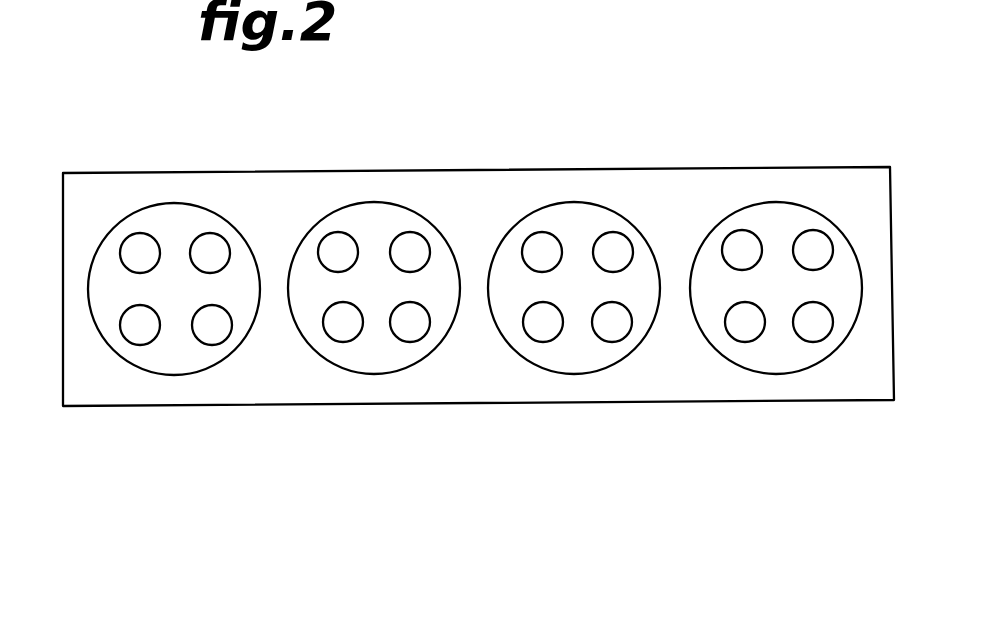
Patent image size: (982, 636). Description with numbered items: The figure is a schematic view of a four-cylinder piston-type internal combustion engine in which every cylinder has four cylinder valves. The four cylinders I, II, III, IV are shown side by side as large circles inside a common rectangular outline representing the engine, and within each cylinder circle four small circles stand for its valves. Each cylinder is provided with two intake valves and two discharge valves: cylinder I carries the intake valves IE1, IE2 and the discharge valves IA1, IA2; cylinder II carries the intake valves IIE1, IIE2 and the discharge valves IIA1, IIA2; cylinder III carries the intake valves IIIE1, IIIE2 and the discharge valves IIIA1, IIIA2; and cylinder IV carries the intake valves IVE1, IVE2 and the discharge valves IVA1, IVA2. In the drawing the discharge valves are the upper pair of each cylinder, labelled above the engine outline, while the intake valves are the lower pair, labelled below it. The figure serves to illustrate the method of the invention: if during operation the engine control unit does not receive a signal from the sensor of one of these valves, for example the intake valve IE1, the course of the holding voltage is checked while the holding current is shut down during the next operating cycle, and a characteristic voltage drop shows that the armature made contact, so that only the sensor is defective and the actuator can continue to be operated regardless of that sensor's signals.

The cylinder I is at (180, 305).
The cylinder II is at (382, 300).
The cylinder III is at (585, 300).
The cylinder IV is at (786, 300).
The discharge valve IA1 is at (130, 248).
The discharge valve IA2 is at (208, 242).
The intake valve IE1 is at (145, 330).
The intake valve IE2 is at (212, 330).
The discharge valve IIA1 is at (337, 248).
The discharge valve IIA2 is at (408, 250).
The intake valve IIE1 is at (343, 322).
The intake valve IIE2 is at (410, 322).
The discharge valve IIIA1 is at (540, 247).
The discharge valve IIIA2 is at (615, 248).
The intake valve IIIE1 is at (543, 322).
The intake valve IIIE2 is at (612, 322).
The discharge valve IVA1 is at (738, 250).
The discharge valve IVA2 is at (810, 250).
The intake valve IVE1 is at (745, 322).
The intake valve IVE2 is at (813, 322).